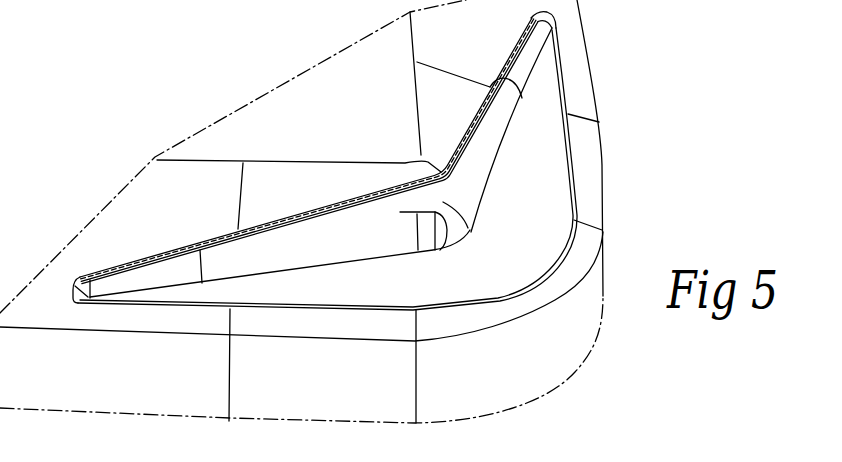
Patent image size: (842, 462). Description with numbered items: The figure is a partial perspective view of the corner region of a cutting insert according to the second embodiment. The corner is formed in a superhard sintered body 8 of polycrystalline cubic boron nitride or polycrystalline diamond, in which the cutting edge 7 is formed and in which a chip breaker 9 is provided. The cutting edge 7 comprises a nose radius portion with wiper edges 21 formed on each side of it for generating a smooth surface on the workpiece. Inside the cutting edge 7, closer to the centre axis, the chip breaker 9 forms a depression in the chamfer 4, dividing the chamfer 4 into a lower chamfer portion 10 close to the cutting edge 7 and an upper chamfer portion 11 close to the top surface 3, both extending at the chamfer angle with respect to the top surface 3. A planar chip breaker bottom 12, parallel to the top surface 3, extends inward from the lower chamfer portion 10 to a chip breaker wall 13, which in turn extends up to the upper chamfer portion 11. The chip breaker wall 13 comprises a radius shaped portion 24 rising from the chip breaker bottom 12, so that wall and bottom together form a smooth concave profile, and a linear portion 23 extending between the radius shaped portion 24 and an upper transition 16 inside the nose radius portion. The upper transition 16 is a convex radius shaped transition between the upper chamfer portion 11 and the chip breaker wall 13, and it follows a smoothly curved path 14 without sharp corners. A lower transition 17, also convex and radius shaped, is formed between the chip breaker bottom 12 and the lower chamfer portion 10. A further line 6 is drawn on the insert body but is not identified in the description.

The top surface 3 is at (338, 132).
The chamfer 4 is at (485, 46).
The lower frame portion 6 is at (347, 392).
The cutting edge 7 is at (560, 298).
The superhard sintered body 8 is at (132, 210).
The chip breaker 9 is at (325, 161).
The lower chamfer portion 10 is at (592, 200).
The upper chamfer portion 11 is at (440, 107).
The chip breaker bottom 12 is at (552, 146).
The chip breaker wall 13 is at (382, 213).
The smoothly curved path 14 is at (193, 247).
The upper transition 16 is at (271, 228).
The lower transition 17 is at (490, 301).
The wiper edges 21 is at (290, 336).
The linear portion 23 is at (440, 190).
The radius shaped portion 24 is at (473, 178).